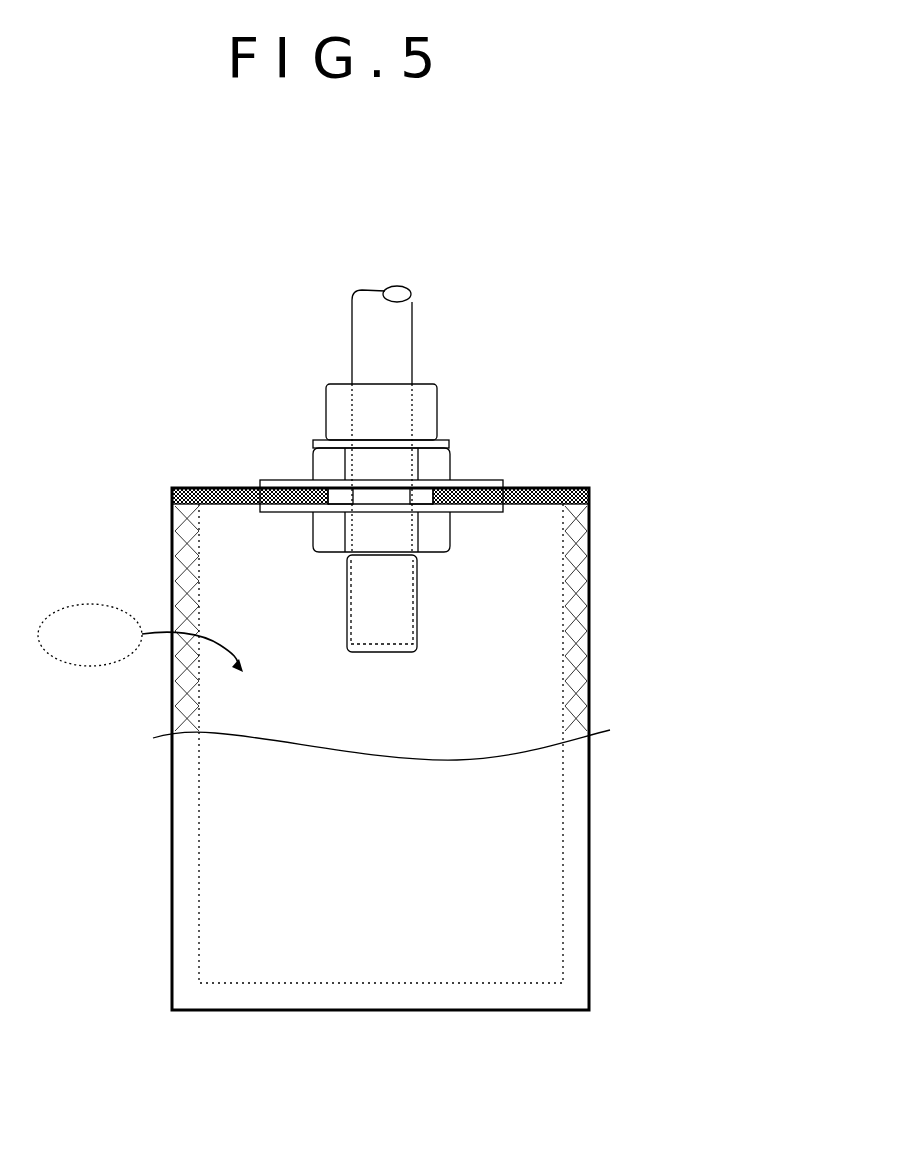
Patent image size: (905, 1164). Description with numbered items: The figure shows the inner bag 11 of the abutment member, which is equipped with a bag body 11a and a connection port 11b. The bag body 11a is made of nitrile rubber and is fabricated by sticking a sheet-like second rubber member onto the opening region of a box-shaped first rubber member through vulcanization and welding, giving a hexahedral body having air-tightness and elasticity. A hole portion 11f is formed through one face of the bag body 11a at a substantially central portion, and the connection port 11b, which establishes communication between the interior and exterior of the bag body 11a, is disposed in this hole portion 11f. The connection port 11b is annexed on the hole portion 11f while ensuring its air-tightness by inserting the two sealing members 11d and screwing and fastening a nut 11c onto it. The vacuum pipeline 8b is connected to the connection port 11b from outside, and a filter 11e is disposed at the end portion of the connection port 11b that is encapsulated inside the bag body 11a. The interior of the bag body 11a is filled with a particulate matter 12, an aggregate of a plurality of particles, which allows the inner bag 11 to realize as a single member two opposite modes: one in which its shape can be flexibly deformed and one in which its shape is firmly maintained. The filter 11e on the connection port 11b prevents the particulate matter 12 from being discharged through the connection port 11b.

The inner bag 11 is at (160, 417).
The bag body 11a is at (172, 852).
The connection port 11b is at (438, 413).
The nut 11c is at (313, 527).
The sealing member 11d is at (485, 480).
The filter 11e is at (417, 607).
The hole portion 11f is at (338, 490).
The vacuum pipeline 8b is at (352, 337).
The particulate matter 12 is at (90, 604).